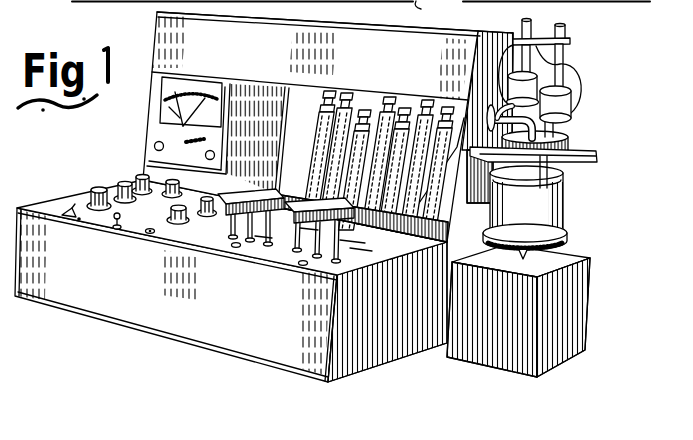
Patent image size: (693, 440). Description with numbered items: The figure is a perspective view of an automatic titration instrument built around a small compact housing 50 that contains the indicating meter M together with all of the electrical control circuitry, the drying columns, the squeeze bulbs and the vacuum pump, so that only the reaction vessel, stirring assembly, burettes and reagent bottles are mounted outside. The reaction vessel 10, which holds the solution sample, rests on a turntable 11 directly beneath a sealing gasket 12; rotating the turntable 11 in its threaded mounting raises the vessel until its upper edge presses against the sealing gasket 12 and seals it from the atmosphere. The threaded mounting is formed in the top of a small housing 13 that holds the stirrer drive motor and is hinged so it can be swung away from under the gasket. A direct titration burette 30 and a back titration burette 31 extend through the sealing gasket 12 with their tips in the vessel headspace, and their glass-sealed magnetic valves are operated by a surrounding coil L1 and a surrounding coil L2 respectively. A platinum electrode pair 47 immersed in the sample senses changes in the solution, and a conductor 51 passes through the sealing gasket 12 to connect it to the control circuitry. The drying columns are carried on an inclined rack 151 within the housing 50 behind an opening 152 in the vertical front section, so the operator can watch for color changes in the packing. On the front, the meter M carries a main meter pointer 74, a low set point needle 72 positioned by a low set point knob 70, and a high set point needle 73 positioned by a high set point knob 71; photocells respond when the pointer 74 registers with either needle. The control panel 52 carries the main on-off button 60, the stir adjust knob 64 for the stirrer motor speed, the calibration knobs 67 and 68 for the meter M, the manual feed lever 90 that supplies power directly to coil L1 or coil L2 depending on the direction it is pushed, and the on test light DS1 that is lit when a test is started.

The indicating meter M is at (147, 80).
The main meter pointer 74 is at (169, 106).
The low set point needle 72 is at (178, 93).
The high set point needle 73 is at (207, 97).
The opening 152 is at (291, 97).
The inclined rack 151 is at (303, 128).
The on test light DS1 is at (436, 11).
The back titration burette 31 is at (534, 29).
The direct titration burette 30 is at (571, 57).
The control coil L2 is at (537, 84).
The control coil L1 is at (571, 107).
The conductor 51 is at (568, 135).
The sealing gasket 12 is at (575, 161).
The platinum electrode pair 47 is at (563, 177).
The reaction vessel 10 is at (566, 207).
The turntable 11 is at (568, 240).
The housing 13 is at (590, 303).
The low set point knob 70 is at (156, 143).
The high set point knob 71 is at (207, 159).
The meter calibration knob 68 is at (167, 184).
The meter calibration knob 67 is at (136, 180).
The control panel 52 is at (80, 192).
The main on-off button 60 is at (72, 216).
The stir adjust knob 64 is at (173, 225).
The manual feed lever 90 is at (210, 220).
The housing 50 is at (88, 315).